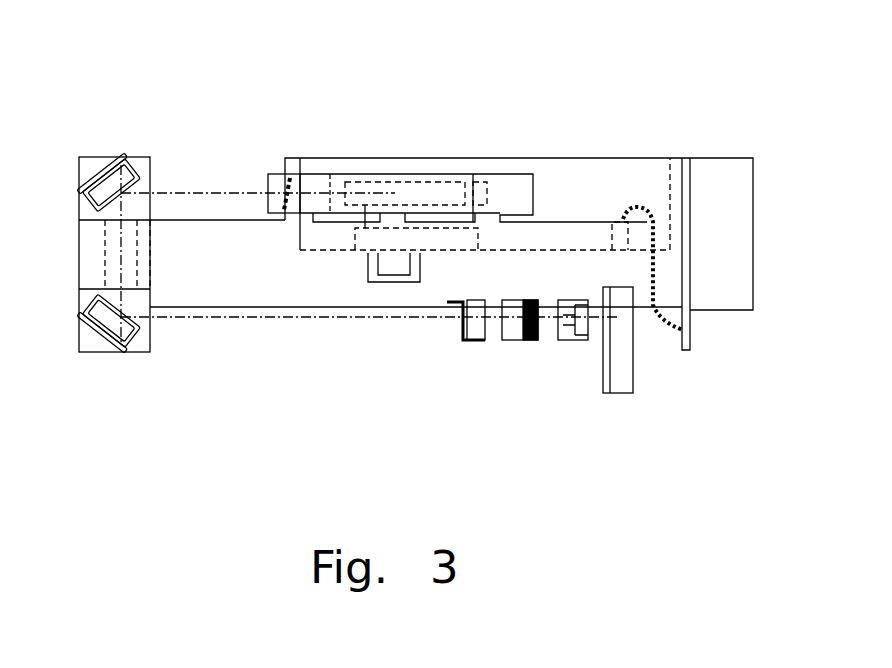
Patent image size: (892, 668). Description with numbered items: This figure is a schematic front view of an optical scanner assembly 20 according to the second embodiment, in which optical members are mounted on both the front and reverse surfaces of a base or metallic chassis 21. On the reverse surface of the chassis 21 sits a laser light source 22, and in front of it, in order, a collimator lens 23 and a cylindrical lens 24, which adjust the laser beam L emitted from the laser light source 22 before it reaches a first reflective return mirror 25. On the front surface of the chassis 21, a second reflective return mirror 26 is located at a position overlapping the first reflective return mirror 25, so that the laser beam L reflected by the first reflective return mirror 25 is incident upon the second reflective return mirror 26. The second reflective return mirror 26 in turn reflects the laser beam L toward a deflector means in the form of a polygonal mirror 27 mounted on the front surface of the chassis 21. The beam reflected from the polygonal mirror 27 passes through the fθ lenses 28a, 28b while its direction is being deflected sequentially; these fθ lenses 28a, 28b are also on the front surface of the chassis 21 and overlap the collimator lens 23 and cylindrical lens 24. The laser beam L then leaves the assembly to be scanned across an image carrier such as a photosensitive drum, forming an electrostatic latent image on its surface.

The optical scanner assembly 20 is at (532, 98).
The chassis 21 is at (563, 228).
The laser light source 22 is at (572, 333).
The collimator lens 23 is at (513, 335).
The cylindrical lens 24 is at (477, 332).
The first reflective return mirror 25 is at (112, 328).
The second reflective return mirror 26 is at (113, 178).
The polygonal mirror 27 is at (413, 188).
The fθ lens 28a is at (332, 193).
The fθ lens 28b is at (315, 184).
The laser beam L is at (293, 320).